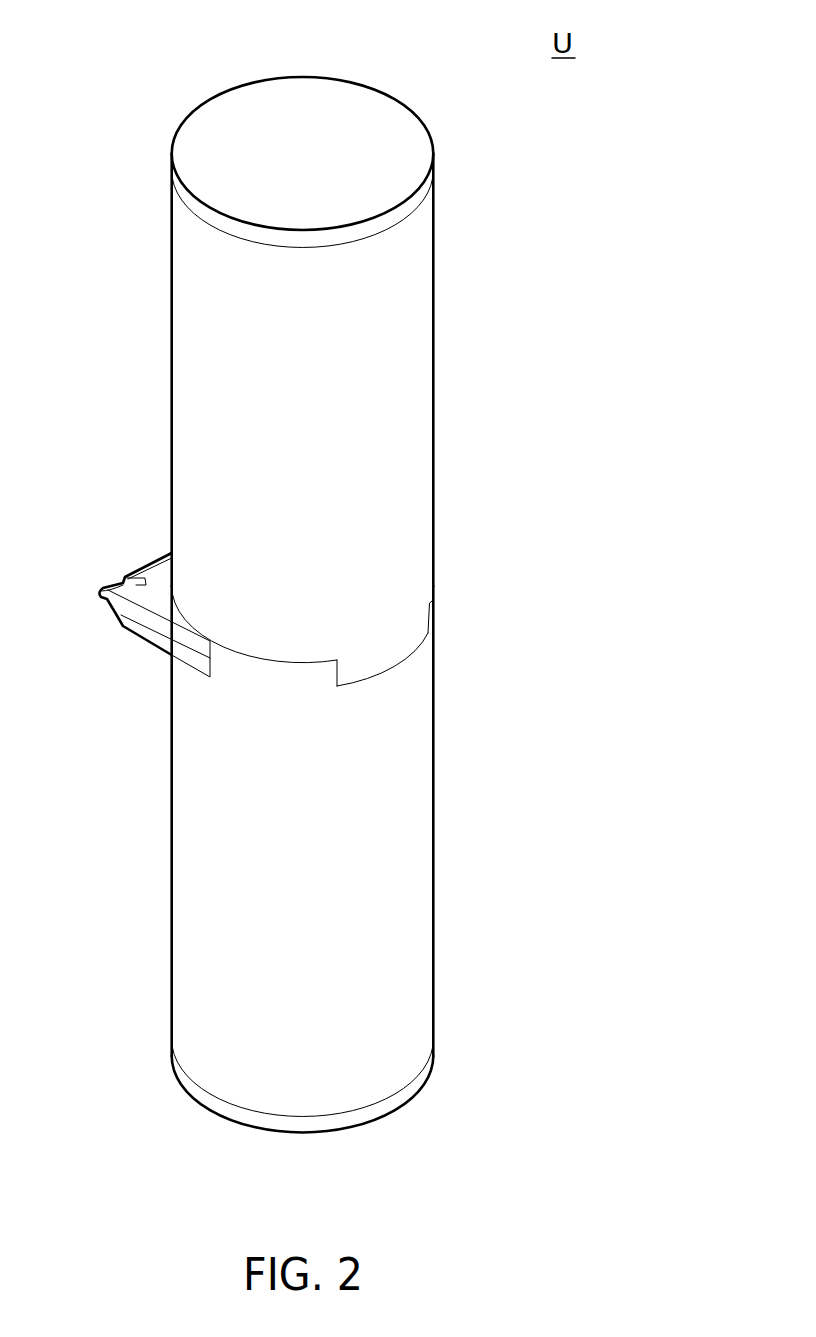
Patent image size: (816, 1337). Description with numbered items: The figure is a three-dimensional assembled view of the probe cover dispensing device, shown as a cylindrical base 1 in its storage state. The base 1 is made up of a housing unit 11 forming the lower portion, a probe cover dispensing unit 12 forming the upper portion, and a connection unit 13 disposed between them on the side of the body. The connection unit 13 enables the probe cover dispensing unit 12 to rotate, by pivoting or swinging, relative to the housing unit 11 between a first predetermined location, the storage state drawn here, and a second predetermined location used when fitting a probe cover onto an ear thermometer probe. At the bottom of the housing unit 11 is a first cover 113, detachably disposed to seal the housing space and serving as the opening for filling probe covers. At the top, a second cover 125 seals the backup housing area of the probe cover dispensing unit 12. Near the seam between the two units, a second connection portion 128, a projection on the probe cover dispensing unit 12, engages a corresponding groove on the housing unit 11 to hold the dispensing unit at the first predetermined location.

The base 1 is at (156, 244).
The housing unit 11 is at (418, 848).
The probe cover dispensing unit 12 is at (418, 318).
The connection unit 13 is at (160, 572).
The first cover 113 is at (397, 1103).
The second cover 125 is at (297, 93).
The second connection portion 128 is at (397, 646).